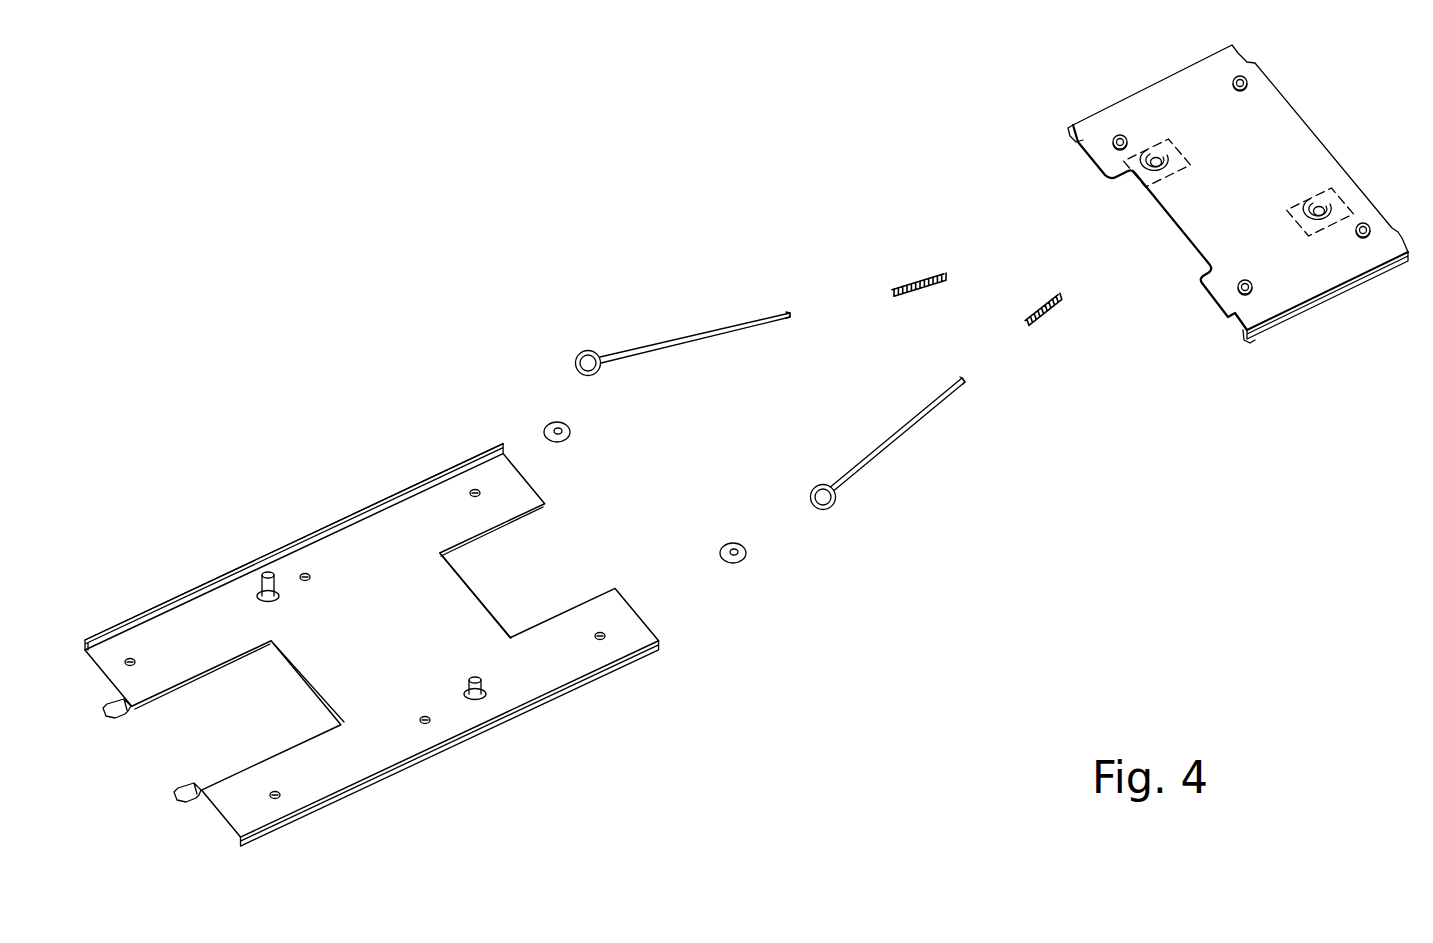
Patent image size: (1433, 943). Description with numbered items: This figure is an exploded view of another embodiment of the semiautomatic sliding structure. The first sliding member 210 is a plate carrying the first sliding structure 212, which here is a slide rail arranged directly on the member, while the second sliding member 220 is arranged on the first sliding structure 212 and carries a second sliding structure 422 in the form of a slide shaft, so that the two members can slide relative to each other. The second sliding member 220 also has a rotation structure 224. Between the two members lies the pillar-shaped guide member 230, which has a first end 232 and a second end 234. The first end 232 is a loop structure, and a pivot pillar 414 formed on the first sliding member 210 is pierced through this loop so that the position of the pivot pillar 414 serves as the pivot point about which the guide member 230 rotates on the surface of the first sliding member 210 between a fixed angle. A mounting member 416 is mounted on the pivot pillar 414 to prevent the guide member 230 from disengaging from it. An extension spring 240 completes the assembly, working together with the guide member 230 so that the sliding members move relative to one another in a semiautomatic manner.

The first sliding member 210 is at (395, 553).
The first sliding structure 212 is at (150, 610).
The second sliding member 220 is at (1182, 221).
The rotation structure 224 is at (1147, 152).
The guide member 230 is at (802, 381).
The first end 232 is at (592, 351).
The second end 234 is at (790, 311).
The extension spring 240 is at (913, 282).
The pivot pillar 414 is at (268, 572).
The mounting member 416 is at (556, 422).
The second sliding structure 422 is at (1070, 132).